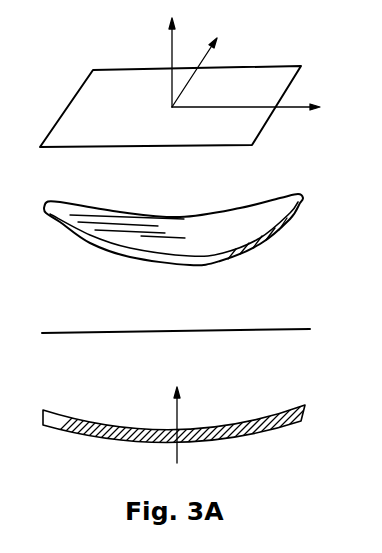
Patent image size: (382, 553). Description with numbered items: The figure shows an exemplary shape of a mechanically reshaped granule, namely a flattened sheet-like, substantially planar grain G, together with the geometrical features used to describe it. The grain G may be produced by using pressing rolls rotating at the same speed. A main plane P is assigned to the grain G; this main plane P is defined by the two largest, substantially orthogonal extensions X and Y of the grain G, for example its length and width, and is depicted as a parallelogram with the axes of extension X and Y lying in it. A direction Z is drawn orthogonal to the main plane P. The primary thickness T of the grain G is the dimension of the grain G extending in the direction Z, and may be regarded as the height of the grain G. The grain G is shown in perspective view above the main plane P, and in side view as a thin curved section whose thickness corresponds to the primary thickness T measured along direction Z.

The main plane P is at (86, 108).
The grain G is at (302, 217).
The primary thickness T is at (256, 463).
The extension X is at (249, 92).
The extension Y is at (202, 68).
The direction Z is at (163, 239).